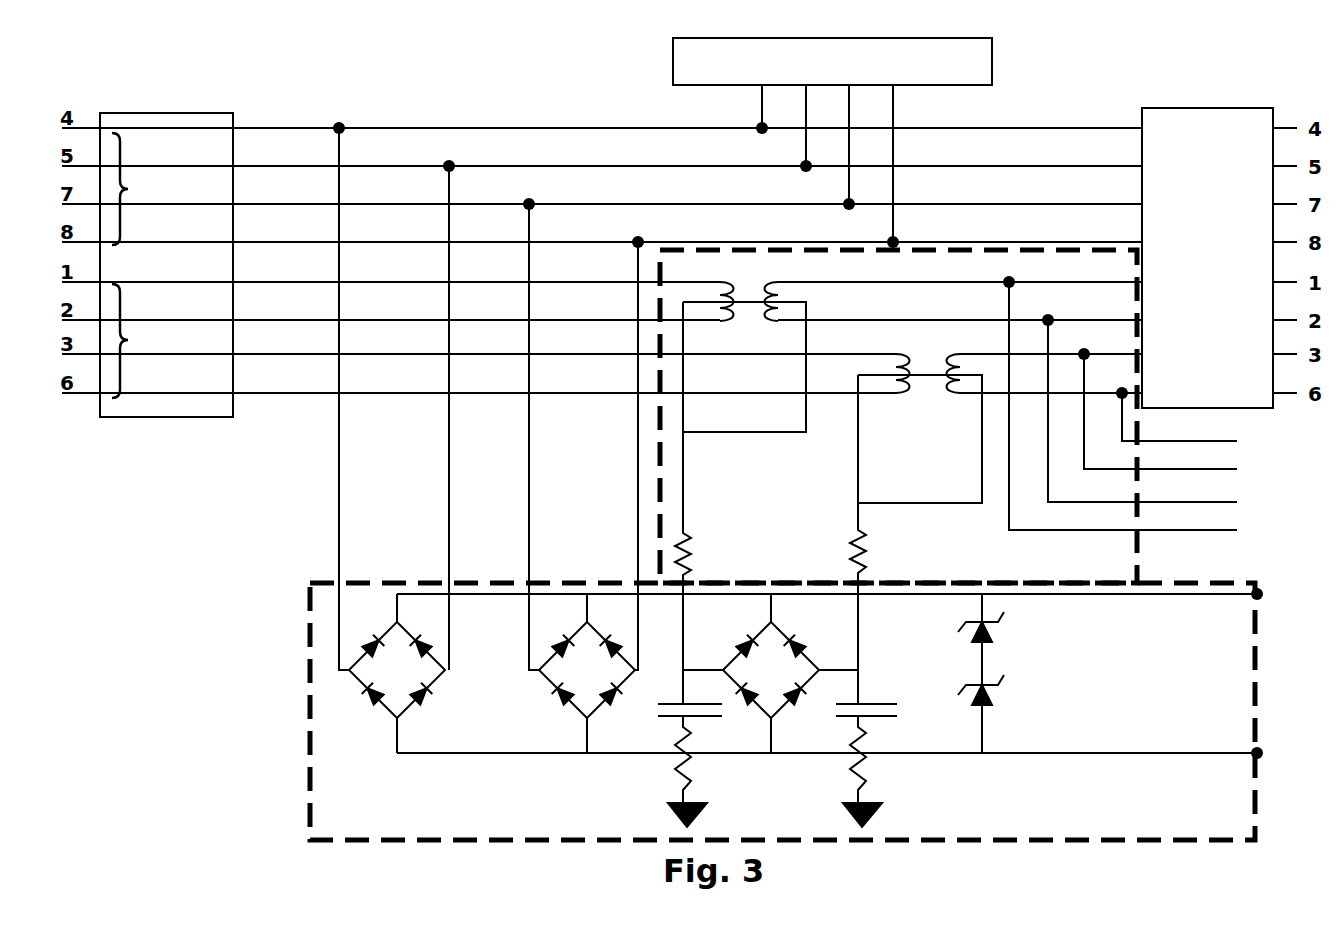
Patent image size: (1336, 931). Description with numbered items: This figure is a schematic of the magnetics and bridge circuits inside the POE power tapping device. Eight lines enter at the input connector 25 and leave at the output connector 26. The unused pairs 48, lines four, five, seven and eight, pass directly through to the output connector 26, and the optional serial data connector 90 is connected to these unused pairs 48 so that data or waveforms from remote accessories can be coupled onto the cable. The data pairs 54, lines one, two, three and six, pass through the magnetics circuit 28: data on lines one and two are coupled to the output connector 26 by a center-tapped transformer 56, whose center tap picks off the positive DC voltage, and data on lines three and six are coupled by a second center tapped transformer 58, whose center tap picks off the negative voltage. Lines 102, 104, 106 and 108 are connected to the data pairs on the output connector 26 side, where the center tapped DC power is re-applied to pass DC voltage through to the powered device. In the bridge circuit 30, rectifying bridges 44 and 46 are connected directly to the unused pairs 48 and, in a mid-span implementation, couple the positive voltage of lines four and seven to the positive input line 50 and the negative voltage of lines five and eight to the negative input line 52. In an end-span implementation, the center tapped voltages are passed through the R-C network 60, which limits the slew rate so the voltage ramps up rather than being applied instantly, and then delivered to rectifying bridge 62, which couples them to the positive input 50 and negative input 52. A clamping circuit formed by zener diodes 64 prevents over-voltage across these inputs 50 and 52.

The input connector 25 is at (166, 265).
The unused pairs 48 is at (166, 189).
The data pairs 54 is at (158, 346).
The serial data connector 90 is at (832, 143).
The output connector 26 is at (1207, 258).
The magnetics circuit 28 is at (898, 416).
The center-tapped transformer 56 is at (740, 432).
The second center tapped transformer 58 is at (916, 468).
The line 102 is at (1205, 420).
The line 104 is at (1186, 415).
The line 106 is at (1168, 414).
The line 108 is at (1148, 409).
The bridge circuit 30 is at (782, 711).
The rectifying bridge 44 is at (394, 437).
The rectifying bridge 46 is at (583, 475).
The rectifying bridge 62 is at (770, 668).
The R-C network 60 is at (788, 765).
The zener diodes 64 is at (971, 673).
The positive input line 50 is at (830, 612).
The negative input line 52 is at (830, 771).